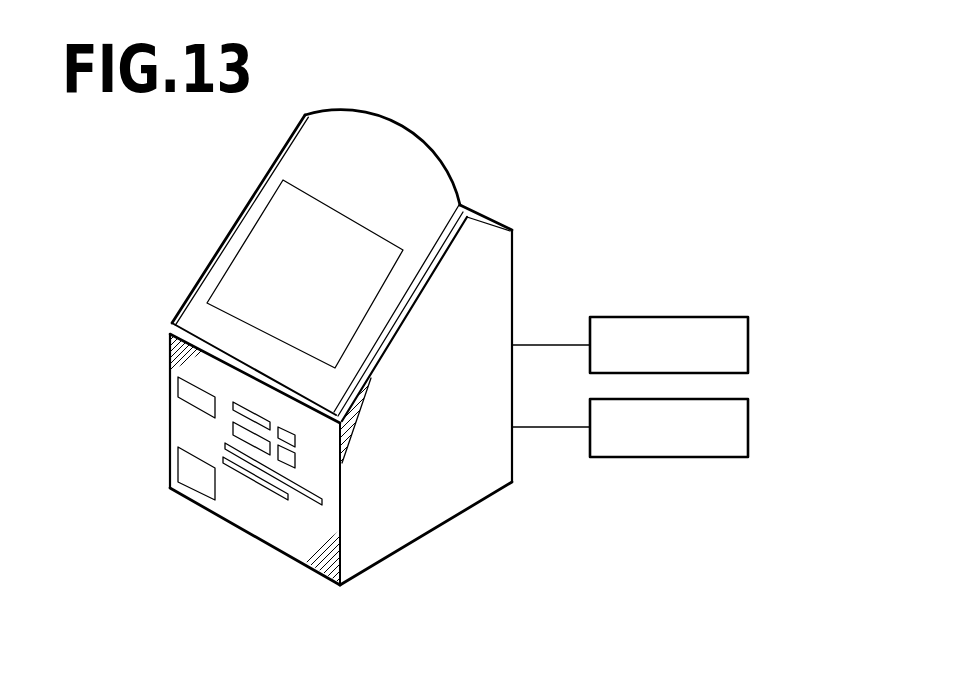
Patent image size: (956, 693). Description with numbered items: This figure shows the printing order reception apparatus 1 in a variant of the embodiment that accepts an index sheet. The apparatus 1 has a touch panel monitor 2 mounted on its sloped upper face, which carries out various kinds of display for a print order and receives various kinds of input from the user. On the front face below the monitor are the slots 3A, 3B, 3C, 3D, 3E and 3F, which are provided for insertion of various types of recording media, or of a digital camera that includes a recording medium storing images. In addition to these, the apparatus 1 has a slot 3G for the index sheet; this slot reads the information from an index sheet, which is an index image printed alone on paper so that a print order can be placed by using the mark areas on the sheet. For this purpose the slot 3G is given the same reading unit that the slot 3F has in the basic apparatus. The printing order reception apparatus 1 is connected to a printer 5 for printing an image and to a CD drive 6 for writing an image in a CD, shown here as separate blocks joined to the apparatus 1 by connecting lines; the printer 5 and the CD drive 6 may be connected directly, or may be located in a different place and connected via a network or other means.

The printing order reception apparatus 1 is at (405, 86).
The touch panel monitor 2 is at (365, 243).
The slot 3A is at (188, 395).
The slot 3B is at (250, 412).
The slot 3C is at (283, 430).
The slot 3D is at (240, 428).
The slot 3E is at (293, 455).
The slot 3F is at (295, 495).
The slot for the index sheet 3G is at (255, 478).
The printer 5 is at (748, 343).
The CD drive 6 is at (748, 425).